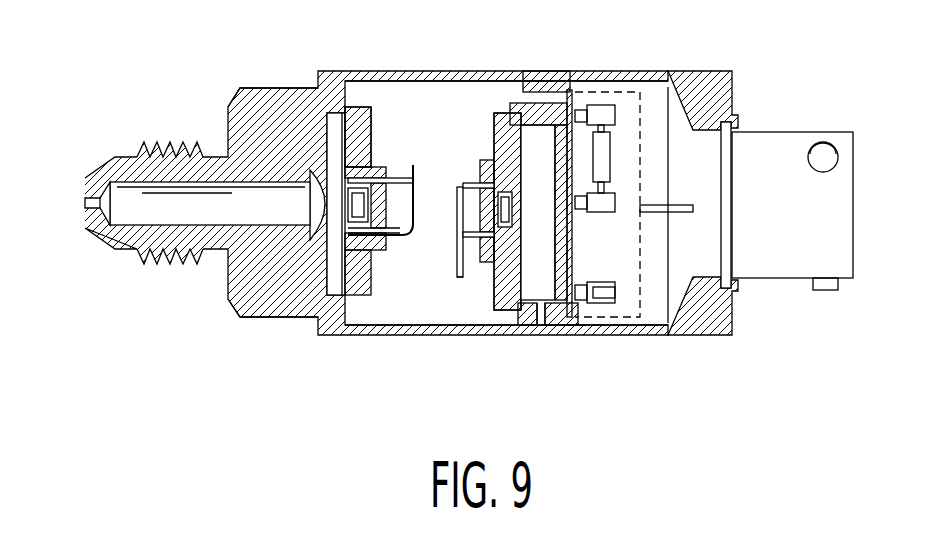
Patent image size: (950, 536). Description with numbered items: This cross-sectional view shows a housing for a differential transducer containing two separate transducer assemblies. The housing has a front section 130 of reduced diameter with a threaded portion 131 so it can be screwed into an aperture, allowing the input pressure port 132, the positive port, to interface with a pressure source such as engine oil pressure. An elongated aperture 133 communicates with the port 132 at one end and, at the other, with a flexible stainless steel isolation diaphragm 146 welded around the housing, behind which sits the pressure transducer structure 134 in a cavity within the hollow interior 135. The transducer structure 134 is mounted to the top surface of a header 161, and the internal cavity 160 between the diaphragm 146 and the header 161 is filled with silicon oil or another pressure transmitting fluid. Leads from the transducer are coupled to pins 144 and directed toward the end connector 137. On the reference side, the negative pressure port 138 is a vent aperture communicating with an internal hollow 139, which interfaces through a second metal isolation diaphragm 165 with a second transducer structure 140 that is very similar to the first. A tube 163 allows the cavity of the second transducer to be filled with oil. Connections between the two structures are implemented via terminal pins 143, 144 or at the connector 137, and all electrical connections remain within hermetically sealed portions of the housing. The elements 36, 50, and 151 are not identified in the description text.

The front section 130 is at (137, 145).
The threaded portion 131 is at (147, 253).
The input pressure port 132 is at (85, 202).
The elongated aperture 133 is at (123, 215).
The pressure transducer structure 134 is at (297, 267).
The hollow interior 135 is at (388, 308).
The end connector 137 is at (838, 260).
The negative pressure port 138 is at (540, 335).
The internal hollow 139 is at (537, 132).
The second transducer structure 140 is at (493, 282).
The terminal pin 143 is at (455, 270).
The pins 144 is at (390, 170).
The isolation diaphragm 146 is at (332, 325).
The electronic component 151 is at (605, 152).
The internal cavity 160 is at (347, 107).
The header 161 is at (372, 203).
The tube 163 is at (457, 187).
The second metal isolation diaphragm 165 is at (522, 330).
The sensor element 36 is at (413, 170).
The circuit board 50 is at (572, 267).